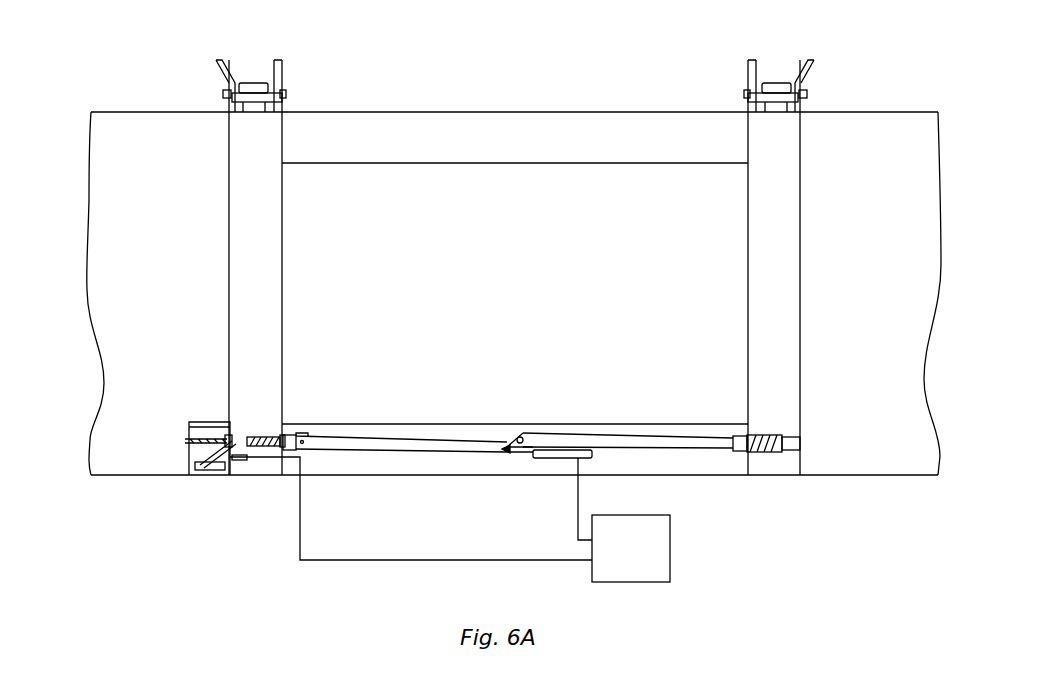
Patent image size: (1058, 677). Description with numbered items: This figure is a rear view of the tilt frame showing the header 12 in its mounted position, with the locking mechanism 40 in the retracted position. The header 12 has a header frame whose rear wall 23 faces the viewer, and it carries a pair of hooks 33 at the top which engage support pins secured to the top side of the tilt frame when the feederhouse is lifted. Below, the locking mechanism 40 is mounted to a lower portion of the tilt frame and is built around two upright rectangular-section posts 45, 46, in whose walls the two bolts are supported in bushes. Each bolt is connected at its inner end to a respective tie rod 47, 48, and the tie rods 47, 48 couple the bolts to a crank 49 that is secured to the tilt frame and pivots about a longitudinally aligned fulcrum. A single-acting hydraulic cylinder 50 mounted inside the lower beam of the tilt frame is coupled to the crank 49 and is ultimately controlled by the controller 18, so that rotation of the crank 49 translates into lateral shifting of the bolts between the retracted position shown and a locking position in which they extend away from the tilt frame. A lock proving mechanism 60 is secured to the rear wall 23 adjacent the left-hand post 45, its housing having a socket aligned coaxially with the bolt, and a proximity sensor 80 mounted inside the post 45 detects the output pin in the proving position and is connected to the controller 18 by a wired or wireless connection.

The header 12 is at (882, 138).
The rear wall 23 is at (91, 188).
The hooks 33 is at (257, 82).
The post 45 is at (229, 252).
The post 46 is at (802, 250).
The tie rod 47 is at (388, 435).
The tie rod 48 is at (665, 442).
The crank 49 is at (515, 447).
The hydraulic cylinder 50 is at (520, 445).
The lock proving mechanism 60 is at (192, 420).
The proximity sensor 80 is at (240, 462).
The locking mechanism 40 is at (533, 464).
The controller 18 is at (672, 550).